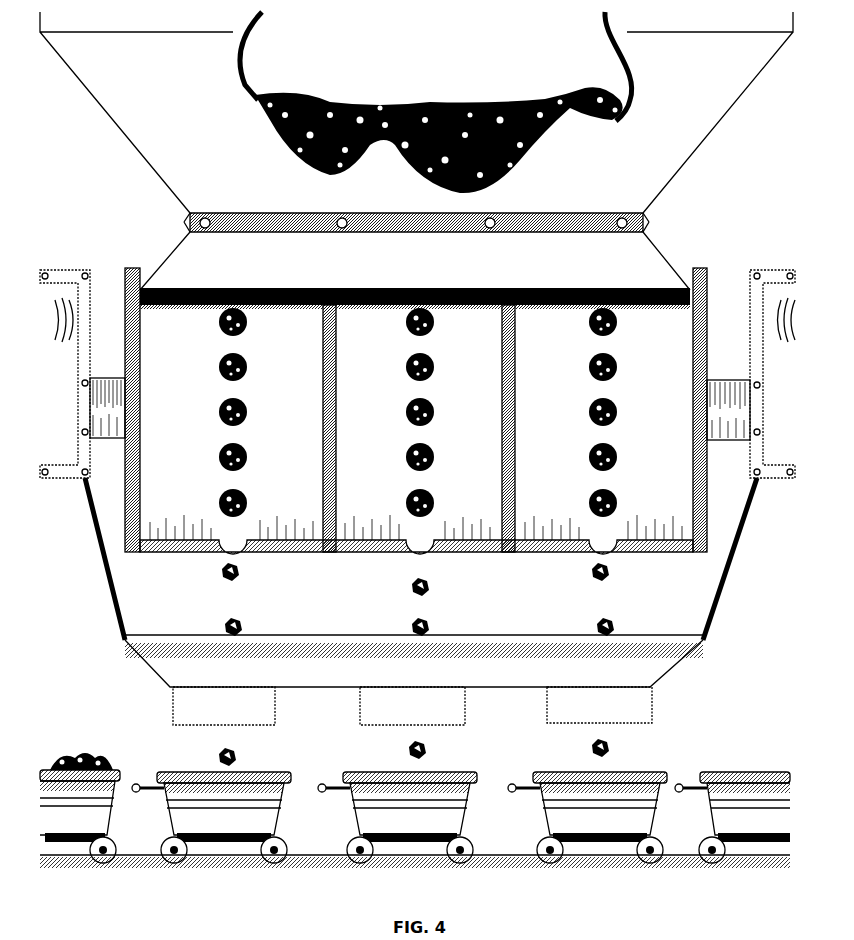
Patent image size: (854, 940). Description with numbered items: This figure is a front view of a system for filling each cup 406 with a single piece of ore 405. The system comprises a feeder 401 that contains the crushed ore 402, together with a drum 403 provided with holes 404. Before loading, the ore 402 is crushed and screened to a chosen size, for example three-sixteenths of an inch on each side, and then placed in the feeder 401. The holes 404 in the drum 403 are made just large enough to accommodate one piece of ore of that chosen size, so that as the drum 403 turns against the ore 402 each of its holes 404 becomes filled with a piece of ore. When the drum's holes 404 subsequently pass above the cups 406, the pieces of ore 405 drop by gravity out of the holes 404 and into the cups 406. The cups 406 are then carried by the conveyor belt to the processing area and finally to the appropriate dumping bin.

The feeder 401 is at (163, 79).
The crushed ore 402 is at (340, 100).
The drum 403 is at (365, 562).
The holes 404 is at (238, 540).
The piece of ore 405 is at (408, 752).
The cup 406 is at (362, 822).